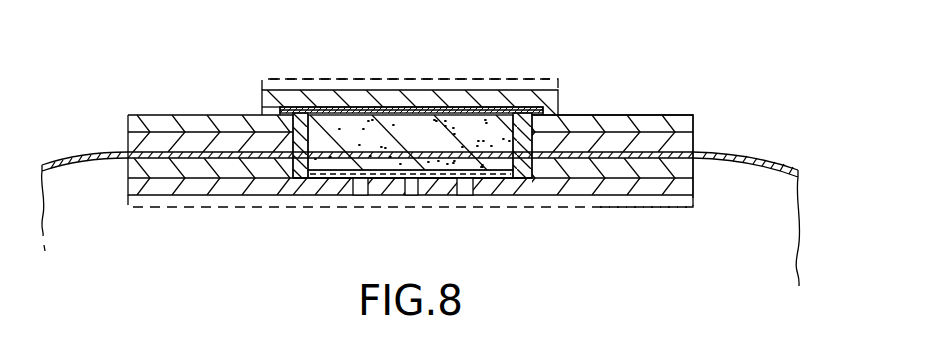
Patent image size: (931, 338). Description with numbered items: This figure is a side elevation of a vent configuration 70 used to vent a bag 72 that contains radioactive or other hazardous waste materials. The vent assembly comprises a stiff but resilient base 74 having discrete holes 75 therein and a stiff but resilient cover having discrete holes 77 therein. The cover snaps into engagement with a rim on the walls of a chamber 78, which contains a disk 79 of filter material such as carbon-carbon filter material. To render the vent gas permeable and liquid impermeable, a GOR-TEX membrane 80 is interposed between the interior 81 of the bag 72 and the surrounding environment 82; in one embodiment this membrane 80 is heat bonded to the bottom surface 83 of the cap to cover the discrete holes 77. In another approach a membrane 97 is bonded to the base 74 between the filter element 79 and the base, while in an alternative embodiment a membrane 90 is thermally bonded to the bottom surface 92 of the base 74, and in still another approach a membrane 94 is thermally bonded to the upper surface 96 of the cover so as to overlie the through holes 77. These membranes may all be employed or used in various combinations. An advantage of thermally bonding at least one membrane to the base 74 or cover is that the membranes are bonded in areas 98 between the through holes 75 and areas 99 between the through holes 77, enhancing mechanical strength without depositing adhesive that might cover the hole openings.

The vent configuration 70 is at (665, 113).
The bag 72 is at (779, 165).
The base 74 is at (218, 200).
The discrete holes 75 is at (364, 203).
The discrete holes 77 is at (413, 97).
The chamber 78 is at (346, 120).
The disk 79 is at (435, 152).
The GOR-TEX membrane 80 is at (520, 90).
The interior 81 is at (272, 273).
The surrounding environment 82 is at (665, 33).
The bottom surface 83 is at (492, 108).
The GOR-TEX membrane 90 is at (693, 209).
The bottom surface 92 is at (632, 196).
The GOR-TEX membrane 94 is at (557, 74).
The upper surface 96 is at (272, 82).
The GOR-TEX membrane 97 is at (318, 203).
The areas 98 is at (442, 198).
The areas 99 is at (437, 108).